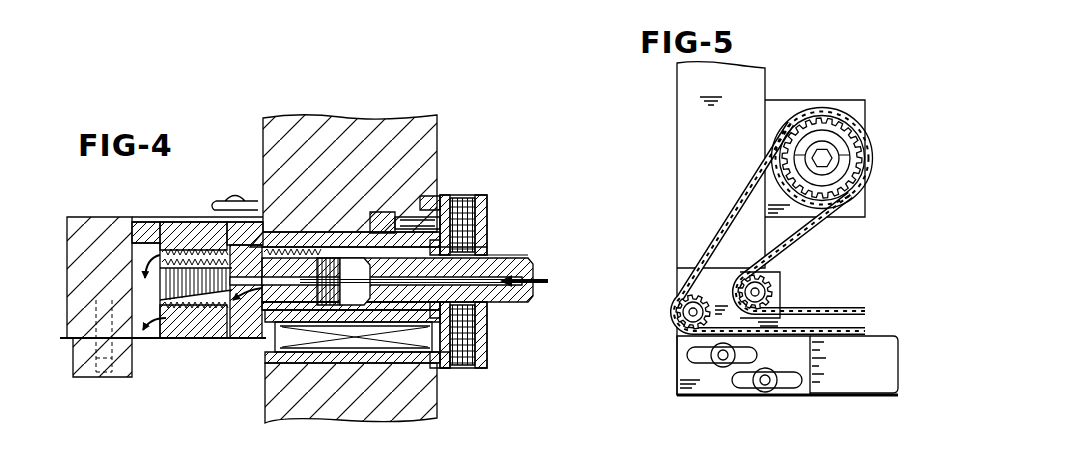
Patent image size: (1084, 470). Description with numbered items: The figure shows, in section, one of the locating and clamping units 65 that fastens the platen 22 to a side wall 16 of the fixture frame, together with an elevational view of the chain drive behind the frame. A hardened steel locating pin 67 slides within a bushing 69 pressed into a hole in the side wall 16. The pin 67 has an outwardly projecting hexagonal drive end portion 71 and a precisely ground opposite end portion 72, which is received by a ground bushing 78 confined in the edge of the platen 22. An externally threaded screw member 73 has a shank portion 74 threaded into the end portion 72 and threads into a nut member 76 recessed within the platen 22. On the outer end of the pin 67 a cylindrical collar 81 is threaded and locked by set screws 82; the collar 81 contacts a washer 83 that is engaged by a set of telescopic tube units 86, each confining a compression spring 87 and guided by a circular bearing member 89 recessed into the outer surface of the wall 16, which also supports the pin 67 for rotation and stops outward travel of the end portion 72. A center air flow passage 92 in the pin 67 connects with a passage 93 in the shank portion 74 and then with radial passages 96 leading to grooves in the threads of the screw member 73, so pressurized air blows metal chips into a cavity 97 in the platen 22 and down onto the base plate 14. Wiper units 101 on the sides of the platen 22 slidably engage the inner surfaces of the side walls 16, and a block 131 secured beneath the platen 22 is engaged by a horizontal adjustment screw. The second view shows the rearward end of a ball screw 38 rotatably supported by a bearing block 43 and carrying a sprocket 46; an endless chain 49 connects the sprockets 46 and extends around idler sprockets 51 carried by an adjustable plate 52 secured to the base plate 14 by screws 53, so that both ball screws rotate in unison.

In FIG. 5, the base plate 14 is at (879, 386).
In FIG. 4, the side wall 16 is at (378, 121).
In FIG. 5, the side wall 16 is at (678, 82).
In FIG. 4, the platen 22 is at (77, 216).
In FIG. 5, the ball screw 38 is at (832, 151).
In FIG. 5, the bearing block 43 is at (780, 106).
In FIG. 5, the sprocket 46 is at (840, 112).
In FIG. 5, the endless chain 49 is at (806, 233).
In FIG. 5, the idler sprocket 51 is at (683, 301).
In FIG. 5, the adjustable plate 52 is at (802, 391).
In FIG. 5, the screw 53 is at (758, 395).
In FIG. 4, the locating and clamping unit 65 is at (494, 206).
In FIG. 4, the locating pin 67 is at (383, 245).
In FIG. 4, the bushing 69 is at (350, 236).
In FIG. 4, the hexagonal drive end portion 71 is at (518, 257).
In FIG. 4, the ground end portion 72 is at (259, 322).
In FIG. 4, the screw member 73 is at (183, 246).
In FIG. 4, the shank portion 74 is at (268, 226).
In FIG. 4, the nut member 76 is at (176, 336).
In FIG. 4, the ground bushing 78 is at (246, 336).
In FIG. 4, the cylindrical collar 81 is at (487, 340).
In FIG. 4, the set screw 82 is at (468, 197).
In FIG. 4, the washer 83 is at (442, 368).
In FIG. 4, the telescopic tube unit 86 is at (355, 366).
In FIG. 4, the compression spring 87 is at (395, 366).
In FIG. 4, the bearing member 89 is at (436, 198).
In FIG. 4, the center air flow passage 92 is at (512, 290).
In FIG. 4, the passage 93 is at (313, 252).
In FIG. 4, the radial passage 96 is at (238, 307).
In FIG. 4, the cavity 97 is at (141, 334).
In FIG. 4, the wiper unit 101 is at (222, 209).
In FIG. 4, the block 131 is at (85, 373).